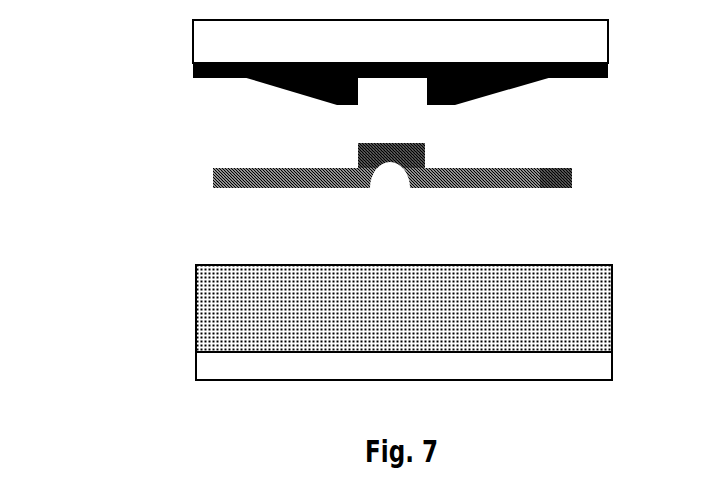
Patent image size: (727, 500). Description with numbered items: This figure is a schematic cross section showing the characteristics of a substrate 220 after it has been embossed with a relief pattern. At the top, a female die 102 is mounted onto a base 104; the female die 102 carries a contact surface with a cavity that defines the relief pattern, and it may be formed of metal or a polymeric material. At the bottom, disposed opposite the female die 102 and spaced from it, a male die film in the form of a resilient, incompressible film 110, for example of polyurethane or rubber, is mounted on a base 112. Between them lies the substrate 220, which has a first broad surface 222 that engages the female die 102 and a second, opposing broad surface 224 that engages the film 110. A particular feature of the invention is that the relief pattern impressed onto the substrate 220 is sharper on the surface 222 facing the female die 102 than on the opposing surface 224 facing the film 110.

The base 104 is at (215, 45).
The female die 102 is at (193, 70).
The first broad surface 222 is at (235, 168).
The substrate 220 is at (235, 190).
The second, opposing broad surface 224 is at (586, 190).
The resilient, incompressible film 110 is at (222, 310).
The base 112 is at (227, 373).